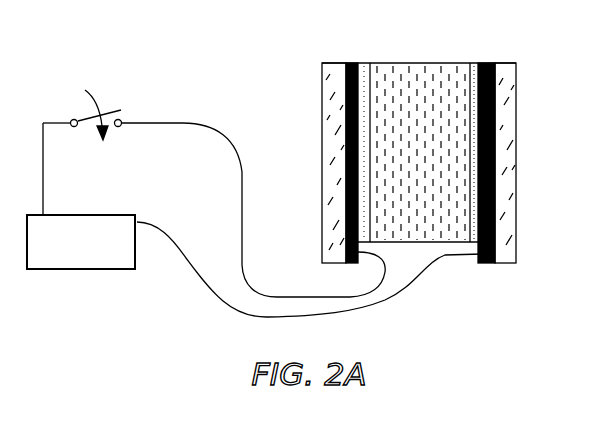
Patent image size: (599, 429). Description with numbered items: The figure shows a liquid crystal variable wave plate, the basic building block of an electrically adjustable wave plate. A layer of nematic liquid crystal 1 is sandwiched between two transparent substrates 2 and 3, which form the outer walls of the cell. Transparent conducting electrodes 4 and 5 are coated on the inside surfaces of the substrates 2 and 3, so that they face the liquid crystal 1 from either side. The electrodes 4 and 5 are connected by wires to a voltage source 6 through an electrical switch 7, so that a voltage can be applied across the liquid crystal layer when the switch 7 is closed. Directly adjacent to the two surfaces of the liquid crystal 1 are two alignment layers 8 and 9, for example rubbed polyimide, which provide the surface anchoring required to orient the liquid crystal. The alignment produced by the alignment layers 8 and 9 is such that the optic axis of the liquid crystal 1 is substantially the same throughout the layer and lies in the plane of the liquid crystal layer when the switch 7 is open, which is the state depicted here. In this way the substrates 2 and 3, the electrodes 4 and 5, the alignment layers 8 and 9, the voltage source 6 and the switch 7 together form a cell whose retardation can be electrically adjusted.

The nematic liquid crystal 1 is at (422, 63).
The transparent substrate 2 is at (332, 63).
The transparent substrate 3 is at (510, 63).
The transparent conducting electrode 4 is at (352, 63).
The transparent conducting electrode 5 is at (488, 63).
The voltage source 6 is at (70, 269).
The electrical switch 7 is at (82, 118).
The alignment layer 8 is at (363, 63).
The alignment layer 9 is at (477, 63).